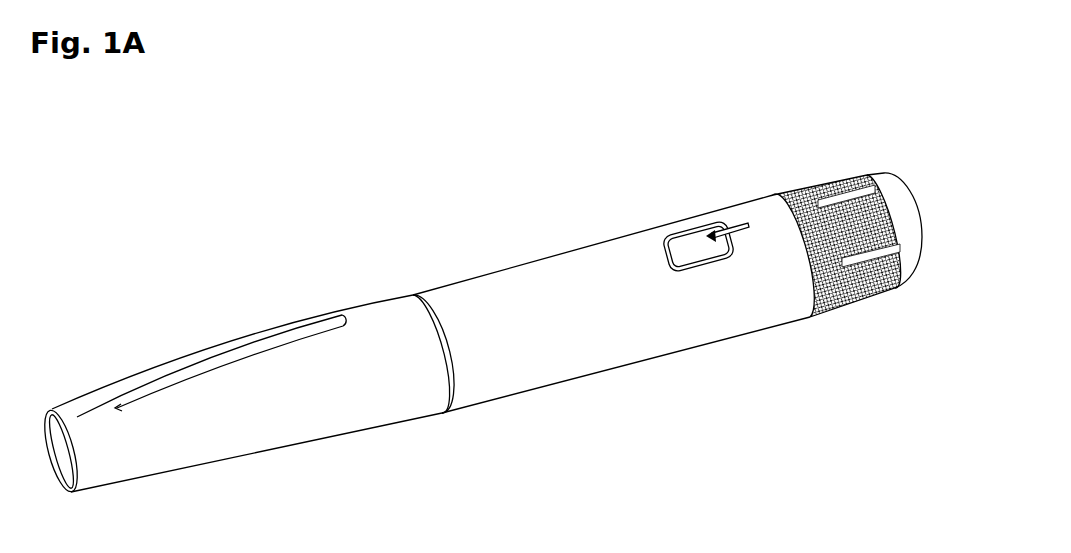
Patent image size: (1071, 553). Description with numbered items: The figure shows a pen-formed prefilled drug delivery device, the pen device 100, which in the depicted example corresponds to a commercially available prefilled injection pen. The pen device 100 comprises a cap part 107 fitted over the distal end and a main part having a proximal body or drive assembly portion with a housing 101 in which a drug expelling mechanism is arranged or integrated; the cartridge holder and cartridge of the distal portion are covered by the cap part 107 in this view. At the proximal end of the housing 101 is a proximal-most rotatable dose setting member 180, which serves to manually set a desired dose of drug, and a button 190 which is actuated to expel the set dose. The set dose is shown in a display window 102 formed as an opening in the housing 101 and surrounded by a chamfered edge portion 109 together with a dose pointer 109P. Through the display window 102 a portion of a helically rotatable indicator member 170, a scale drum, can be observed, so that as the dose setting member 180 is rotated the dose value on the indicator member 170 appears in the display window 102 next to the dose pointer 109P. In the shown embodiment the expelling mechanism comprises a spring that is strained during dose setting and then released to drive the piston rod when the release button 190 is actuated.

The pen device 100 is at (480, 299).
The housing 101 is at (632, 343).
The display window 102 is at (695, 232).
The cap part 107 is at (213, 388).
The chamfered edge portion 109 is at (678, 228).
The dose pointer 109P is at (712, 234).
The indicator member 170 is at (693, 266).
The dose setting member 180 is at (860, 293).
The button 190 is at (887, 173).